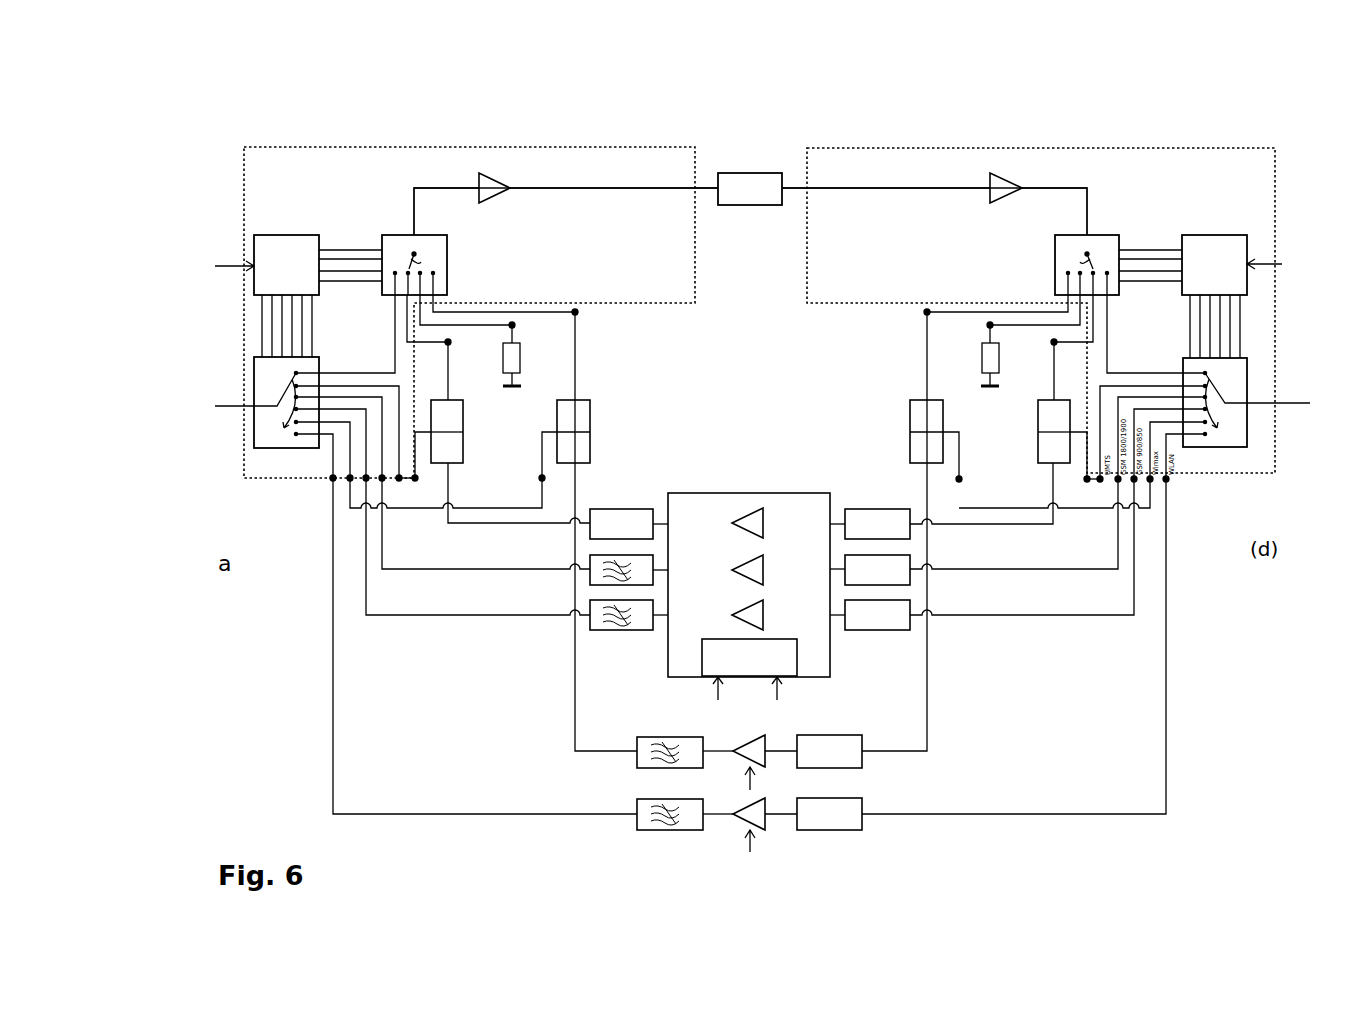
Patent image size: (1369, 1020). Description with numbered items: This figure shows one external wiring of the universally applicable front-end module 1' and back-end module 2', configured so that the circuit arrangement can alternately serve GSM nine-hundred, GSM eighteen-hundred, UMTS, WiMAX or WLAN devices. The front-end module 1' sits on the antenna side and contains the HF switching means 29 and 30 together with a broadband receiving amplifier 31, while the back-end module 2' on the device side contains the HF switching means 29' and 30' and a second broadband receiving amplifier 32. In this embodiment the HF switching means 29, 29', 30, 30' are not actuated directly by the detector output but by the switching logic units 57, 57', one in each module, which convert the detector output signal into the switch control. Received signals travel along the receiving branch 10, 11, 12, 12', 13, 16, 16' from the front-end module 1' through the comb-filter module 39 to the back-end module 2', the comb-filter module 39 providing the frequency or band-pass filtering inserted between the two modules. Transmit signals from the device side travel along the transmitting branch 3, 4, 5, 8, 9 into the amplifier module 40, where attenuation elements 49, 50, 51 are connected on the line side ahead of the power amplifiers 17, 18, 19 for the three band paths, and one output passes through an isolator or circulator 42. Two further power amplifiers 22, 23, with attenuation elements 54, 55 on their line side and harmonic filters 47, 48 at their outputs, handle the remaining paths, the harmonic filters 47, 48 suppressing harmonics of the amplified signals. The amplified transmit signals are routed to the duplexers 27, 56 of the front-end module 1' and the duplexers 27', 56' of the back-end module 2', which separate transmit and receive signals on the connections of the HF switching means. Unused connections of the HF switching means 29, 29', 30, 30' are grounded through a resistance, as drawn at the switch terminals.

The front-end module 1' is at (469, 312).
The back-end module 2' is at (1041, 310).
The transmitting branch 3 is at (955, 524).
The transmitting branch 4 is at (988, 569).
The transmitting branch 5 is at (1025, 615).
The transmitting branch 8 is at (927, 697).
The transmitting branch 9 is at (975, 813).
The receiving branch 10 is at (782, 102).
The receiving branch 11 is at (566, 211).
The receiving branch 12 is at (470, 356).
The receiving branch 12' is at (268, 283).
The receiving branch 13 is at (934, 211).
The receiving branch 16 is at (546, 523).
The receiving branch 16' is at (357, 433).
The power amplifier 17 is at (752, 522).
The power amplifier 18 is at (750, 570).
The power amplifier 19 is at (757, 615).
The power amplifier 22 is at (745, 750).
The power amplifier 23 is at (757, 814).
The duplexer 27 is at (467, 395).
The duplexer 27' is at (1033, 387).
The HF switching means 29 is at (242, 433).
The HF switching means 29' is at (1263, 427).
The HF switching means 30 is at (382, 186).
The HF switching means 30' is at (1137, 186).
The receiving amplifier 31 is at (483, 173).
The receiving amplifier 32 is at (1005, 183).
The comb-filter module 39 is at (750, 189).
The amplifier module 40 is at (722, 493).
The isolator or circulator 42 is at (629, 524).
The harmonic filter 47 is at (648, 763).
The harmonic filter 48 is at (637, 814).
The attenuation element 49 is at (870, 524).
The attenuation element 50 is at (870, 570).
The attenuation element 51 is at (870, 615).
The attenuation element 54 is at (829, 751).
The attenuation element 55 is at (829, 814).
The duplexer 56 is at (607, 439).
The duplexer 56' is at (898, 425).
The switching logic unit 57 is at (298, 296).
The switching logic unit 57' is at (1200, 296).